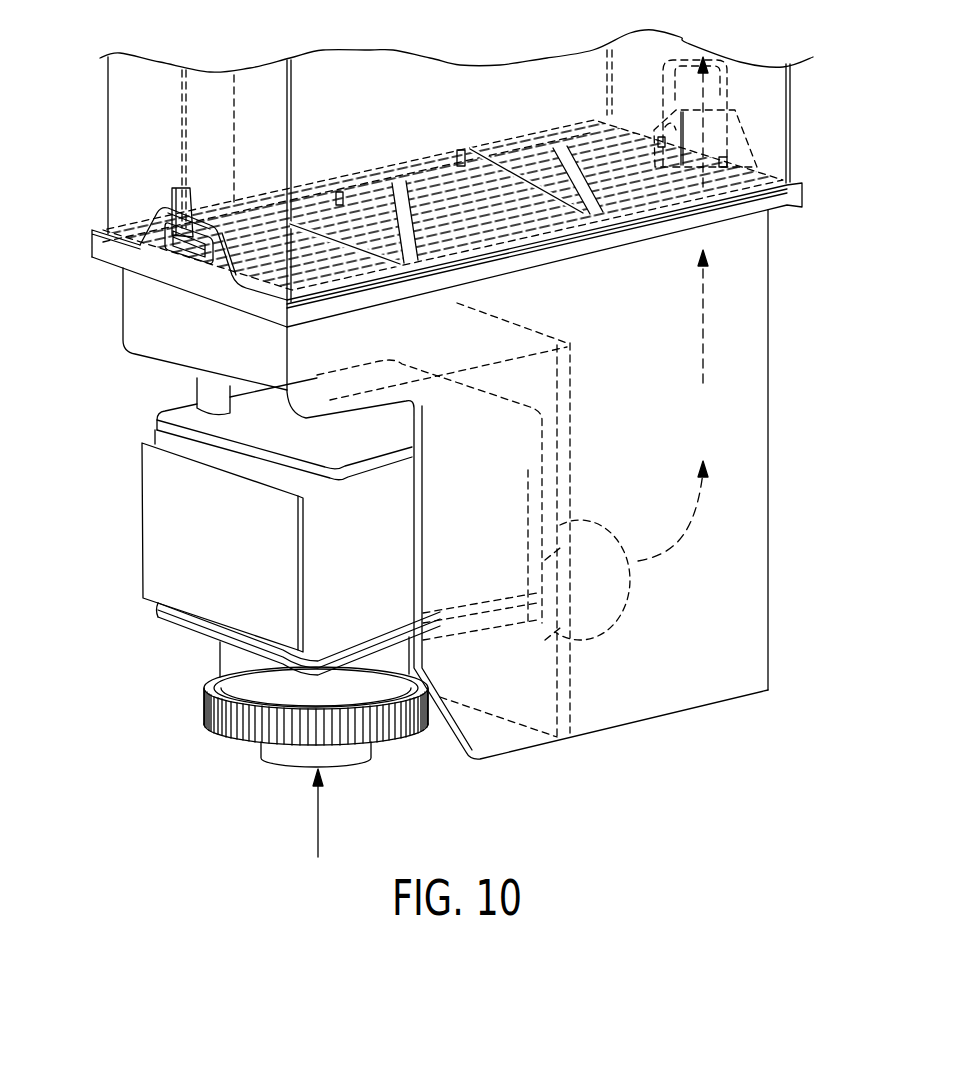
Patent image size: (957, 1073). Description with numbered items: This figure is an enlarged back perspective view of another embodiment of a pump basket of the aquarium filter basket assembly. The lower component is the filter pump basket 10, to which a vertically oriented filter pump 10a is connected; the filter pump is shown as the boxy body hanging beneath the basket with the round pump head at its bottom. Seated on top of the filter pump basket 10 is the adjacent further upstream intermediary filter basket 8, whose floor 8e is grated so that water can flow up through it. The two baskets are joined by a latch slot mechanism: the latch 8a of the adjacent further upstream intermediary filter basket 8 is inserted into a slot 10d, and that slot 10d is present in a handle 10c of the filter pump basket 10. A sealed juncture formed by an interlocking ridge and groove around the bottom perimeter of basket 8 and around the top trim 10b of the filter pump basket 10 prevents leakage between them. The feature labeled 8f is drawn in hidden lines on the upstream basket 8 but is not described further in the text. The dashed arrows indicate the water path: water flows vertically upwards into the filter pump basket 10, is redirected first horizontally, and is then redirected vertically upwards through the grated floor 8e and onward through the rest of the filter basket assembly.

The adjacent further upstream intermediary filter basket 8 is at (788, 117).
The latch 8a is at (193, 237).
The grated floor 8e is at (410, 180).
The hidden channel 8f is at (207, 117).
The filter pump basket 10 is at (768, 613).
The filter pump 10a is at (142, 503).
The top trim 10b is at (802, 192).
The handle 10c is at (96, 228).
The slot 10d is at (177, 255).